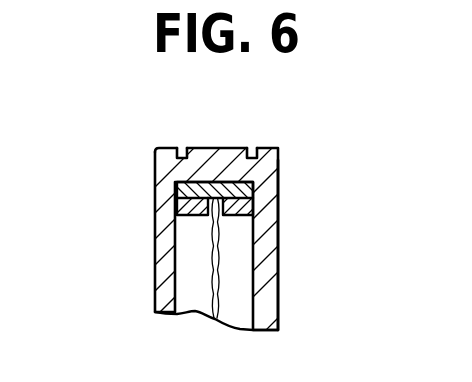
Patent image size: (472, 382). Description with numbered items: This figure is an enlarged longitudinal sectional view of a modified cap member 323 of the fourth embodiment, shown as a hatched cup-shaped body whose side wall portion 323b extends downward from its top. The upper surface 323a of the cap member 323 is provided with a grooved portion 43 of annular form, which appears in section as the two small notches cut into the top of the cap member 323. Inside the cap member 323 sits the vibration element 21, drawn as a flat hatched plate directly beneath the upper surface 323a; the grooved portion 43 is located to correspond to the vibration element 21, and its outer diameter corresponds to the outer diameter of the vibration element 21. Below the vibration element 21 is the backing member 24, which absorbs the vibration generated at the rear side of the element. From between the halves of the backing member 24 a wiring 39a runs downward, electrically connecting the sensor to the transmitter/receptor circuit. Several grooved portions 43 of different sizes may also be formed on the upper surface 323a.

The cap member 323 is at (267, 192).
The upper surface 323a is at (165, 148).
The side wall of housing 323b is at (278, 230).
The grooved portion 43 is at (182, 147).
The vibration element 21 is at (177, 190).
The backing member 24 is at (177, 208).
The wiring 39a is at (217, 300).